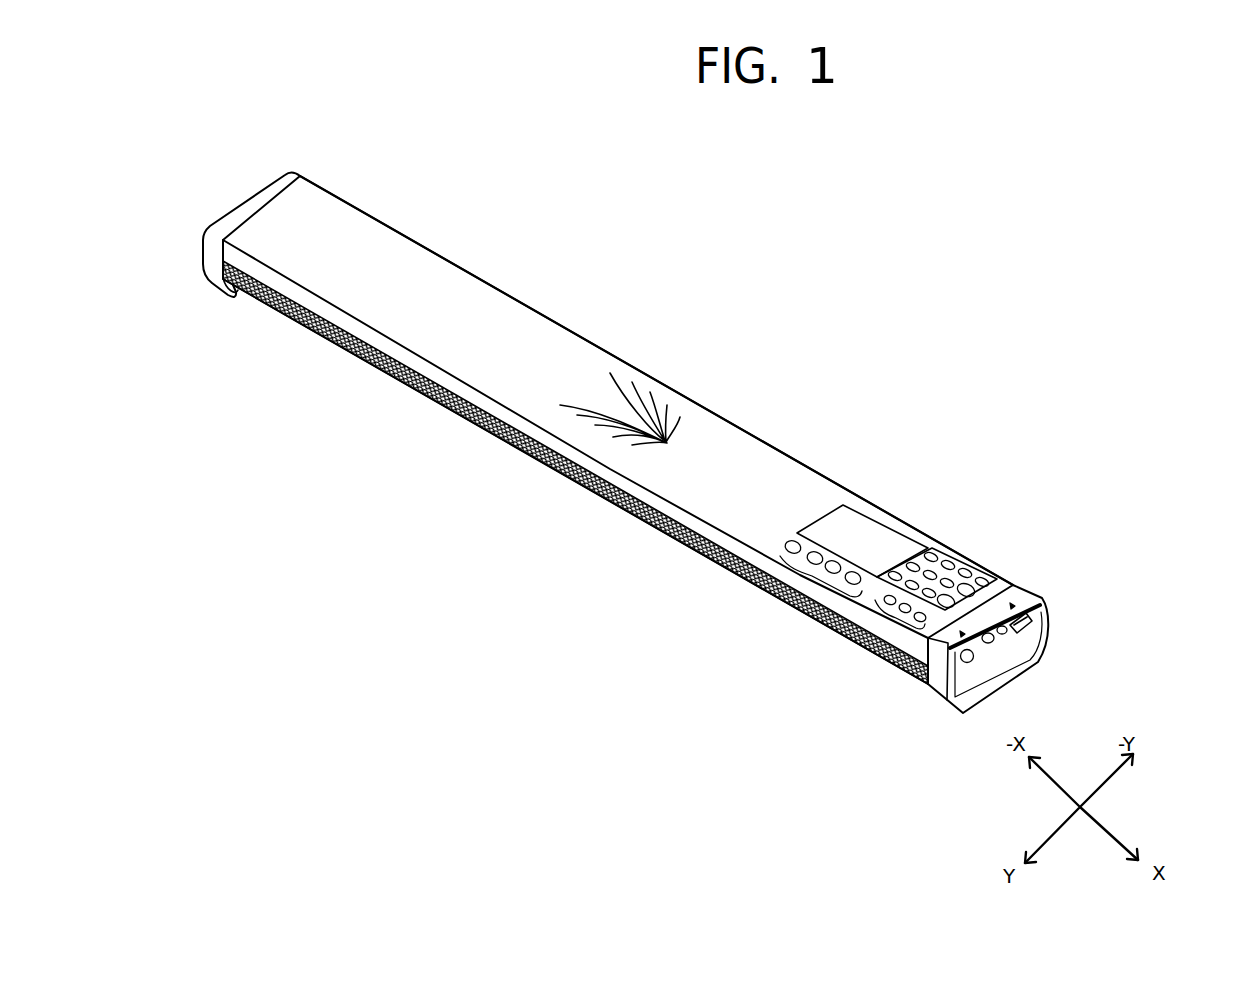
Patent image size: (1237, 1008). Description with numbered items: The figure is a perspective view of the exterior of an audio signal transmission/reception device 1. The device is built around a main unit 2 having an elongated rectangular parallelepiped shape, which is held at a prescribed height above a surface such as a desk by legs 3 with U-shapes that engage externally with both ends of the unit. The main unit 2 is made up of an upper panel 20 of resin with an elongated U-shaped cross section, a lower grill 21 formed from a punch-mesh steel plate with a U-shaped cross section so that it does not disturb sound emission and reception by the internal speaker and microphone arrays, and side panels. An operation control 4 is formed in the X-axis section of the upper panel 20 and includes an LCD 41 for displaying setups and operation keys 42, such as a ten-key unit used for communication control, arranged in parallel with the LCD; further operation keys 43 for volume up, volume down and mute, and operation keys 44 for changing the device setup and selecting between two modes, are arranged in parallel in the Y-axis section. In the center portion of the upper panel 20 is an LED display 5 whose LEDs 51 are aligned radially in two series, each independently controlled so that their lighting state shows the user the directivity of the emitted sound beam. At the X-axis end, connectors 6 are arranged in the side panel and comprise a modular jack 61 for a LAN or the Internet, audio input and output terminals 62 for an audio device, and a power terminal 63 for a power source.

The audio signal transmission/reception device 1 is at (683, 427).
The main unit 2 is at (618, 430).
The legs 3 is at (290, 187).
The upper panel 20 is at (747, 448).
The lower grill 21 is at (690, 542).
The operation control 4 is at (885, 587).
The LCD 41 is at (871, 532).
The operation keys 42 is at (962, 563).
The operation keys 43 is at (806, 577).
The operation keys 44 is at (893, 625).
The LED display 5 is at (638, 419).
The LEDs 51 is at (660, 438).
The connectors 6 is at (1061, 647).
The modular jack 61 is at (1034, 623).
The audio input terminal and audio output terminal 62 is at (1003, 634).
The power terminal 63 is at (969, 662).